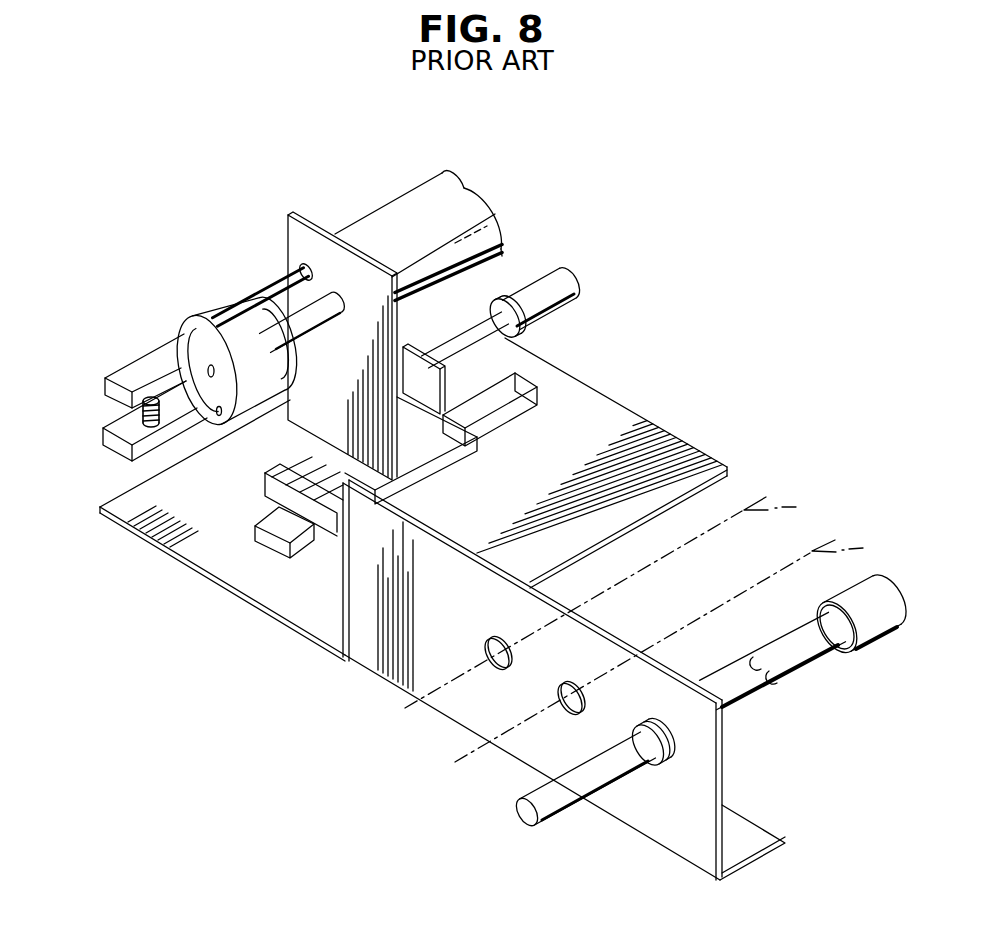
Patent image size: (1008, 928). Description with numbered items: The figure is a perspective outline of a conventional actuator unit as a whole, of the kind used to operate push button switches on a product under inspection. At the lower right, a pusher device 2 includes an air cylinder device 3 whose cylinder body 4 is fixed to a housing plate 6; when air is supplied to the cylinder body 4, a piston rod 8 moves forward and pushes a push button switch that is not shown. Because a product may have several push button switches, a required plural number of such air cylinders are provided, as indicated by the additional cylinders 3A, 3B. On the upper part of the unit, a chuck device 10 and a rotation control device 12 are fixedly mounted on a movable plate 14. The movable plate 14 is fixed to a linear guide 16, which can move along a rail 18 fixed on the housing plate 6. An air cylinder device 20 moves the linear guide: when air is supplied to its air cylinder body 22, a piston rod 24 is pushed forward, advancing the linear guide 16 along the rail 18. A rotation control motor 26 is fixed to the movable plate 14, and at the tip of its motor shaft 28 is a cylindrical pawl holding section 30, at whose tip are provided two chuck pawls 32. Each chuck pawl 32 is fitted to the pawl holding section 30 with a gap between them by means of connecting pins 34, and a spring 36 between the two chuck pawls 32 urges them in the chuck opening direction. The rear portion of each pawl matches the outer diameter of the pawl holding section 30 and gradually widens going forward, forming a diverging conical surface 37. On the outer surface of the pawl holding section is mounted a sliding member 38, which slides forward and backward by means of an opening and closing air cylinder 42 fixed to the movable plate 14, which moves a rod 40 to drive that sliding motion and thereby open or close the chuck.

The pusher device 2 is at (767, 738).
The air cylinder device 3 is at (828, 661).
The air cylinder 3A is at (681, 646).
The air cylinder 3B is at (620, 598).
The cylinder body 4 is at (779, 681).
The housing plate 6 is at (680, 831).
The piston rod 8 is at (604, 775).
The chuck device 10 is at (209, 351).
The rotation control device 12 is at (451, 205).
The movable plate 14 is at (338, 262).
The linear guide 16 is at (274, 494).
The rail 18 is at (288, 542).
The air cylinder device 20 is at (575, 271).
The air cylinder body 22 is at (558, 297).
The piston rod 24 is at (488, 346).
The rotation control motor 26 is at (488, 226).
The motor shaft 28 is at (320, 318).
The pawl holding section 30 is at (321, 359).
The chuck pawls 32 is at (124, 378).
The connecting pins 34 is at (228, 372).
The spring 36 is at (138, 412).
The diverging conical surface 37 is at (152, 370).
The sliding member 38 is at (201, 326).
The rod 40 is at (281, 288).
The opening and closing air cylinder 42 is at (419, 196).